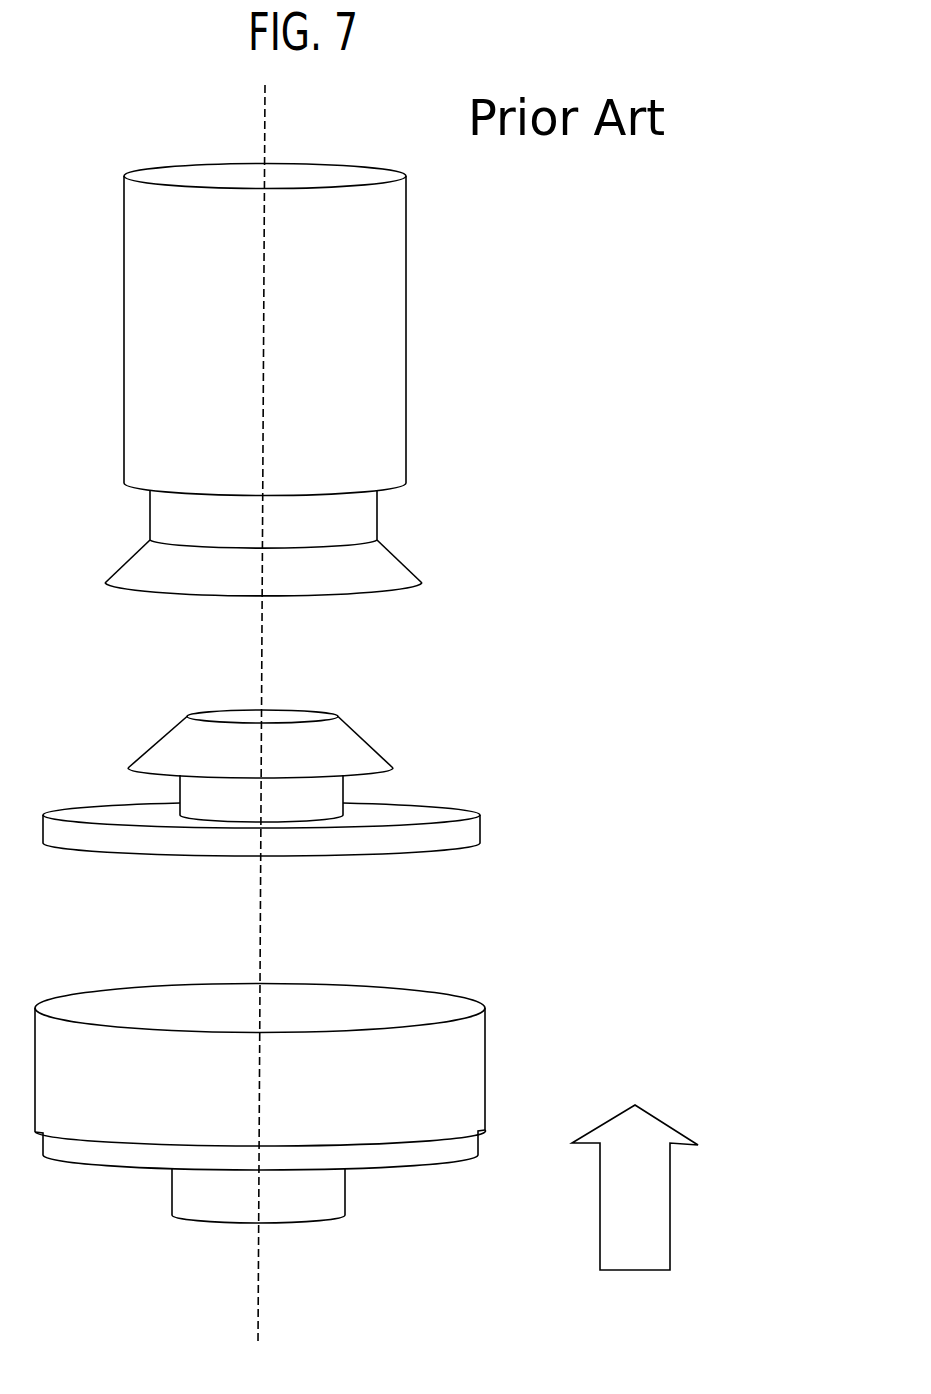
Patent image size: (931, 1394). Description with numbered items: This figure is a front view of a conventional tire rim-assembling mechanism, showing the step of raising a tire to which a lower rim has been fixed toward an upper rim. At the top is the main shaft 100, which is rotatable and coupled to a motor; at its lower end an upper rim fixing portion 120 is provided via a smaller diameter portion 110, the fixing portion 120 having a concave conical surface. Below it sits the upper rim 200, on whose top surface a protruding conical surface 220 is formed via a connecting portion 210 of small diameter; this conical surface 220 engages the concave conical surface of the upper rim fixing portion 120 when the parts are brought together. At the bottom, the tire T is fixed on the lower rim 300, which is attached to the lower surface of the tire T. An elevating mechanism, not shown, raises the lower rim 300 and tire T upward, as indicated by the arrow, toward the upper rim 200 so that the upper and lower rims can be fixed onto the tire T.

The main shaft 100 is at (390, 263).
The smaller diameter portion 110 is at (367, 522).
The upper rim fixing portion 120 is at (392, 573).
The upper rim 200 is at (468, 840).
The connecting portion 210 is at (327, 800).
The protruding conical surface 220 is at (337, 763).
The lower rim 300 is at (322, 1212).
The tire T is at (463, 1062).